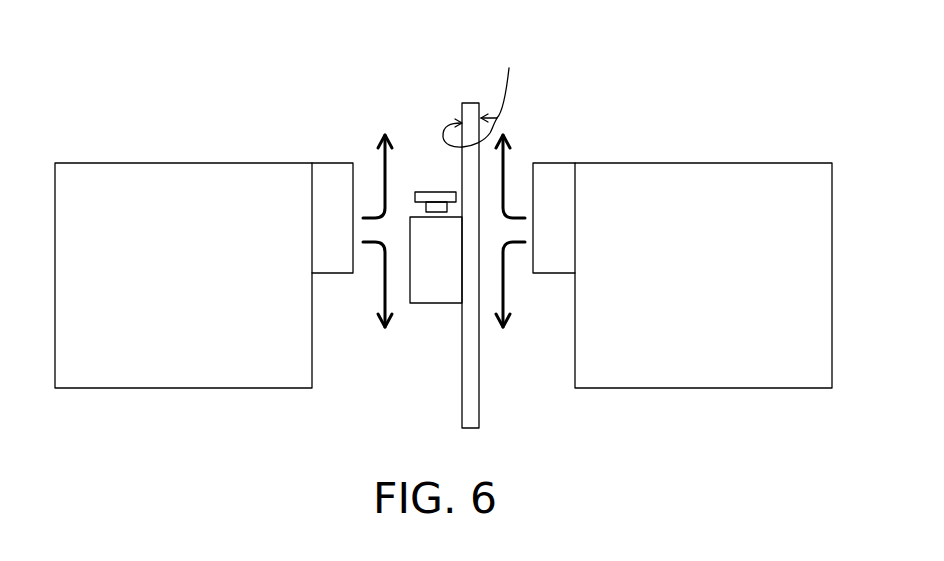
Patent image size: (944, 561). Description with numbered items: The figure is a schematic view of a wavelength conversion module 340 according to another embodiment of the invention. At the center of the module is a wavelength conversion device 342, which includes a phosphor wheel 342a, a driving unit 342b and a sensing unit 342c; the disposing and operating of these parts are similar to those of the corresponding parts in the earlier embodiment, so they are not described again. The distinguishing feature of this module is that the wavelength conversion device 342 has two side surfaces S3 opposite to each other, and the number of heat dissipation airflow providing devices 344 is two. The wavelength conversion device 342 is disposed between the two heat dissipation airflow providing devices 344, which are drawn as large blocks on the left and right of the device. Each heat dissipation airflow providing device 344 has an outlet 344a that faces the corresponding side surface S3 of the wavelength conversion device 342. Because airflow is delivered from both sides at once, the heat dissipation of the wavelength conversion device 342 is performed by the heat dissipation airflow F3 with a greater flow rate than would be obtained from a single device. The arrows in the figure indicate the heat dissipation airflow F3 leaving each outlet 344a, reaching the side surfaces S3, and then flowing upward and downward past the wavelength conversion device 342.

The wavelength conversion module 340 is at (835, 446).
The wavelength conversion device 342 is at (461, 233).
The phosphor wheel 342a is at (471, 110).
The driving unit 342b is at (425, 237).
The sensing unit 342c is at (440, 195).
The heat dissipation airflow providing device 344 is at (147, 183).
The outlet 344a is at (352, 190).
The side surface S3 is at (483, 93).
The heat dissipation airflow F3 is at (502, 295).